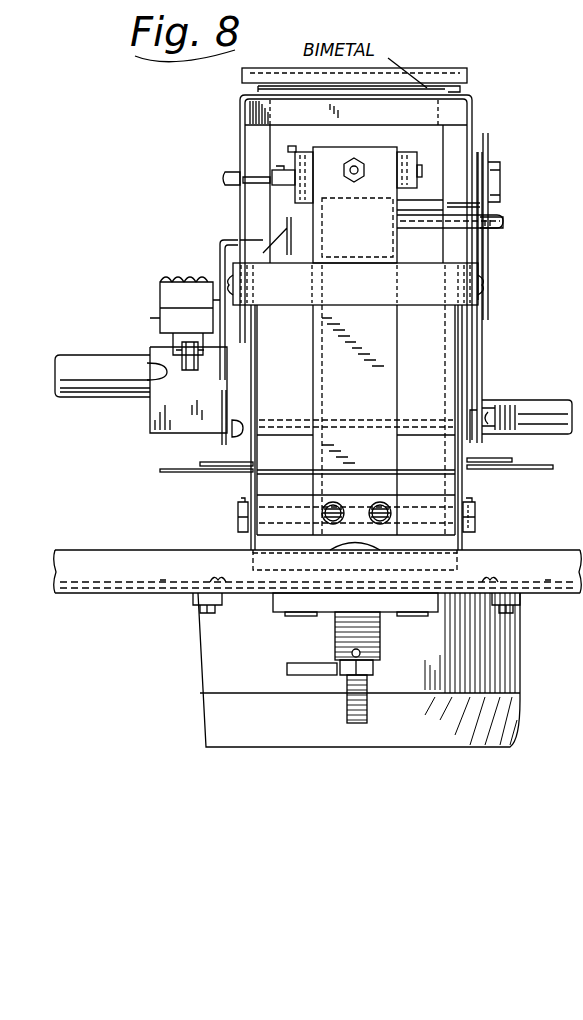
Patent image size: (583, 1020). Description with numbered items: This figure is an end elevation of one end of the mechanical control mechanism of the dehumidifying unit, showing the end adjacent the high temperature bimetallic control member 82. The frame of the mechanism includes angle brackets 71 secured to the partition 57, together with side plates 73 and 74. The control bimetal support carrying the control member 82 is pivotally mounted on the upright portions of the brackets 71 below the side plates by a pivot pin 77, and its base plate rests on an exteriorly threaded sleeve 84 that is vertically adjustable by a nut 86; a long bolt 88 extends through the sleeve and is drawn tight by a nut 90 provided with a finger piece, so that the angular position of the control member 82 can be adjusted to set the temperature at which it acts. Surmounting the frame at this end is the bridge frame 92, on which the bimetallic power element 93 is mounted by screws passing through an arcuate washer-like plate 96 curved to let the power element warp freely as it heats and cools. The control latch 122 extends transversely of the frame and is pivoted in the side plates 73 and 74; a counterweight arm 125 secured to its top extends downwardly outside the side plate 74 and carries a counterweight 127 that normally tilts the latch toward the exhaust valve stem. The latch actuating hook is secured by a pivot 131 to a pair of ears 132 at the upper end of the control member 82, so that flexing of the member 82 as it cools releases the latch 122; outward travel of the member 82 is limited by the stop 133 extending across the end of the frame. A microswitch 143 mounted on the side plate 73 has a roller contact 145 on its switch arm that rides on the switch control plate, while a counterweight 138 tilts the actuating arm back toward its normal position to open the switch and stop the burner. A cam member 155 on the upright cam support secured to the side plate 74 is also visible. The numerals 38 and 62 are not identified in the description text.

The arcuate washer-like plate 96 is at (438, 70).
The bimetallic power element 93 is at (445, 85).
The bridge frame 92 is at (478, 108).
The cam member 155 is at (490, 138).
The ears 132 is at (290, 150).
The pivot 131 is at (288, 162).
The control latch 122 is at (428, 243).
The stop 133 is at (292, 300).
The microswitch 143 is at (165, 290).
The counterweight 138 is at (95, 365).
The shaft 38 is at (9, 326).
The roller contact 145 is at (185, 370).
The high temperature bimetallic control member 82 is at (392, 348).
The counterweight arm 125 is at (480, 358).
The counterweight 127 is at (528, 398).
The side plate 73 is at (250, 455).
The side plate 74 is at (470, 452).
The pivot pin 77 is at (476, 515).
The bracket 71 is at (250, 540).
The partition 57 is at (123, 595).
The nut 86 is at (282, 597).
The exteriorly threaded sleeve 84 is at (382, 648).
The nut 90 is at (300, 665).
The long bolt 88 is at (347, 712).
The housing 62 is at (272, 737).